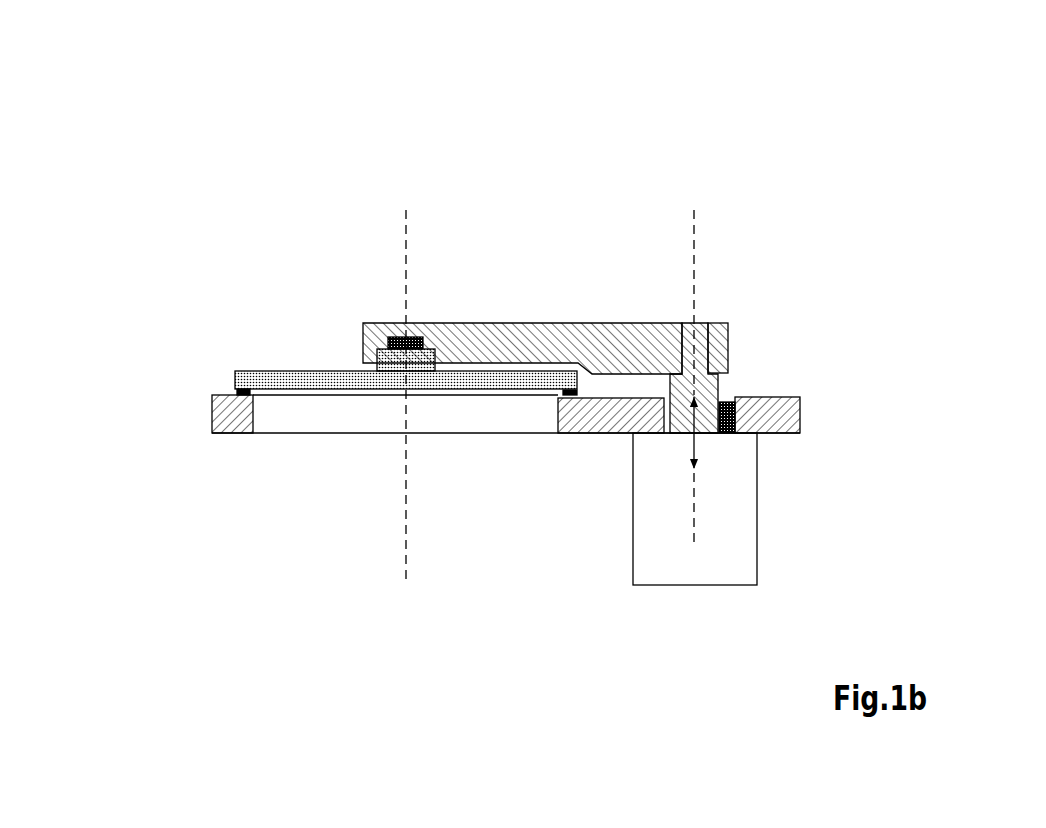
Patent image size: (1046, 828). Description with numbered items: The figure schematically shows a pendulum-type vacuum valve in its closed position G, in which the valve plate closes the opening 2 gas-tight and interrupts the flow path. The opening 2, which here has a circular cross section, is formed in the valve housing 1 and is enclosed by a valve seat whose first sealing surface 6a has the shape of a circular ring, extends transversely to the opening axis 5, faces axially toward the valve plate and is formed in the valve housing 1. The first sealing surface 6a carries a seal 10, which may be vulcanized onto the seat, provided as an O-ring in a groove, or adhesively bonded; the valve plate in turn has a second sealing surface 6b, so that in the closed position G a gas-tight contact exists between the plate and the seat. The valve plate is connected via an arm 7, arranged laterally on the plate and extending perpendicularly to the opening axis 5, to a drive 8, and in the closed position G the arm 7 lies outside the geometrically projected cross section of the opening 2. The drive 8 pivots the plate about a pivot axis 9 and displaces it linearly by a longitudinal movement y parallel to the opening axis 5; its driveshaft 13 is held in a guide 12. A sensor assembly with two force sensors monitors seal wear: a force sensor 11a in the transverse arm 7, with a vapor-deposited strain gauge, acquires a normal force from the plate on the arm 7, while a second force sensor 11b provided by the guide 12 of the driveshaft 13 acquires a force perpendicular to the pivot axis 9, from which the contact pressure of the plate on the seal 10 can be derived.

The valve housing 1 is at (825, 399).
The opening 2 is at (436, 509).
The opening axis 5 is at (239, 308).
The first sealing surface 6a is at (163, 446).
The second sealing surface 6b is at (325, 304).
The arm 7 is at (638, 221).
The drive 8 is at (774, 523).
The pivot axis 9 is at (804, 360).
The seal 10 is at (161, 363).
The force sensor 11a is at (248, 236).
The second force sensor 11b is at (819, 452).
The guide 12 is at (585, 454).
The driveshaft 13 is at (800, 360).
The longitudinal movement y is at (608, 482).
The closed position G is at (525, 193).